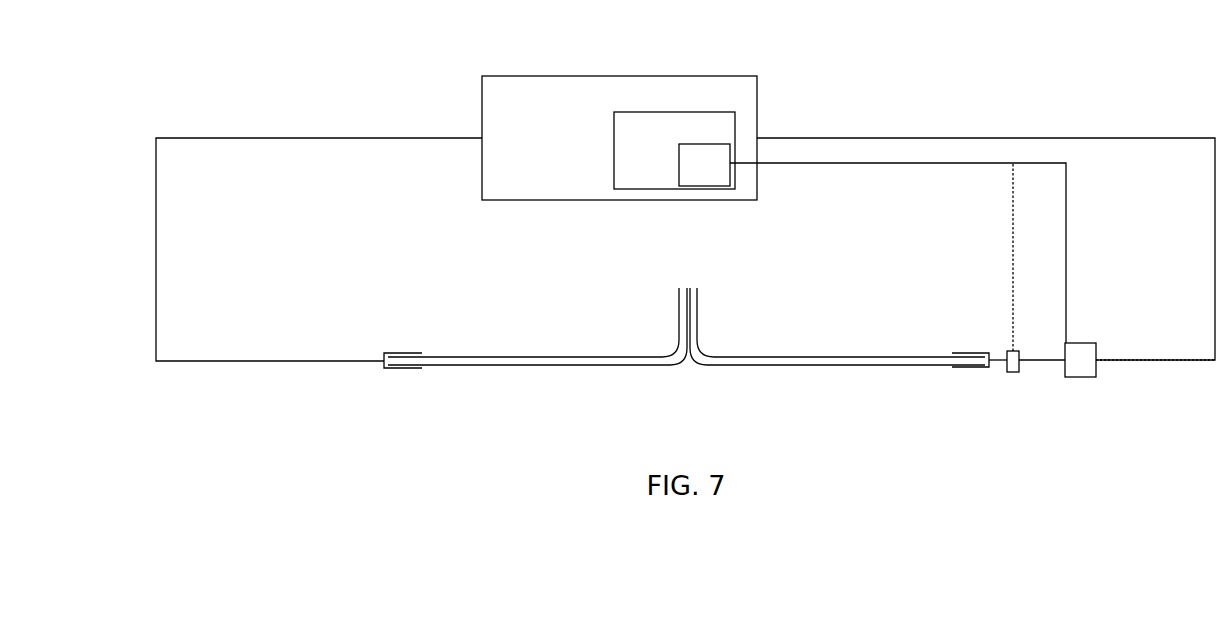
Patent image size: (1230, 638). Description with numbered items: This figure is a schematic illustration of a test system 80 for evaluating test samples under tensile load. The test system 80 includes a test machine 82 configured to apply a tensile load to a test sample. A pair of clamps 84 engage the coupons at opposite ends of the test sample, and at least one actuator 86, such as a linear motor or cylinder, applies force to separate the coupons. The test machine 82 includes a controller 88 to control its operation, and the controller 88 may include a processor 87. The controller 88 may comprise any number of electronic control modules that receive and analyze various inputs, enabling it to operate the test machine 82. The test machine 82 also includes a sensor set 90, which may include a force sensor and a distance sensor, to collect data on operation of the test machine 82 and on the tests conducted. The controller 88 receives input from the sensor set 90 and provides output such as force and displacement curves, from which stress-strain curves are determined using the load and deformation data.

The test system 80 is at (843, 90).
The test machine 82 is at (469, 124).
The clamps 84 is at (406, 370).
The actuator 86 is at (1076, 343).
The processor 87 is at (722, 182).
The controller 88 is at (705, 112).
The sensor set 90 is at (1012, 375).